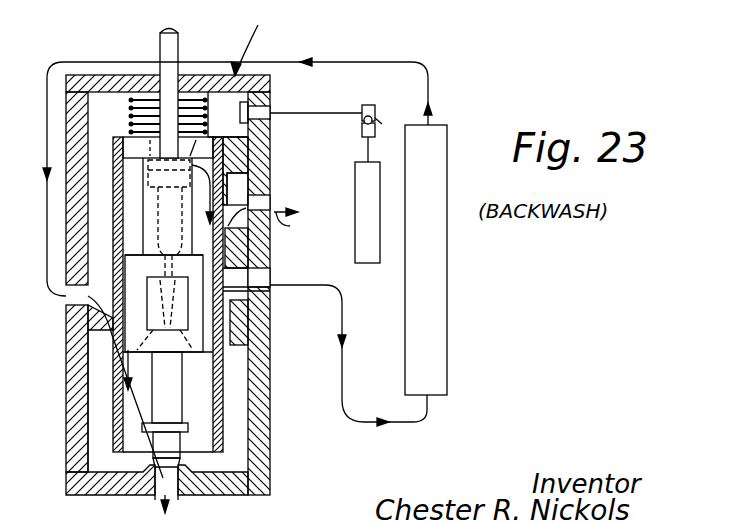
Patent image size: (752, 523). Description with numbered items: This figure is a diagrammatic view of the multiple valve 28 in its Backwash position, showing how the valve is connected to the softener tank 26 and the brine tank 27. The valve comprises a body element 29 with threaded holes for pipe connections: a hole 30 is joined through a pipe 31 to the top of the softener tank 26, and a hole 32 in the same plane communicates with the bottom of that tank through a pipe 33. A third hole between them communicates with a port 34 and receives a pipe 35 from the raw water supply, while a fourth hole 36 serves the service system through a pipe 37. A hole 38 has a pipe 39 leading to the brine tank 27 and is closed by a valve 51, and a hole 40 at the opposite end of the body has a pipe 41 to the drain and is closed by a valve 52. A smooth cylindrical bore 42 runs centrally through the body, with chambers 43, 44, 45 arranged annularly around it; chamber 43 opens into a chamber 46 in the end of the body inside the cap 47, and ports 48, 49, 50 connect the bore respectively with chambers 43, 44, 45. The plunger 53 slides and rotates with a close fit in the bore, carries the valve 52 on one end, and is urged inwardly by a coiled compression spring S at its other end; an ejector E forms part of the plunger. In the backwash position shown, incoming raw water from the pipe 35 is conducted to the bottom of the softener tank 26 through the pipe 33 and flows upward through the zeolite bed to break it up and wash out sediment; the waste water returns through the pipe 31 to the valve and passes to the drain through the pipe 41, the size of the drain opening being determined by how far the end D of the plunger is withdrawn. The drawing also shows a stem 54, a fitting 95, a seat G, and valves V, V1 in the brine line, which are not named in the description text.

The softener tank 26 is at (407, 322).
The brine tank 27 is at (360, 255).
The multiple valve 28 is at (74, 398).
The body element 29 is at (268, 380).
The hole 30 is at (68, 312).
The pipe 31 is at (300, 63).
The hole 32 is at (264, 280).
The pipe 33 is at (344, 394).
The port 34 is at (151, 172).
The pipe 35 is at (225, 115).
The hole 36 is at (268, 203).
The pipe 37 is at (298, 222).
The hole 38 is at (266, 121).
The pipe 39 is at (368, 150).
The hole 40 is at (180, 492).
The pipe 41 is at (164, 496).
The cylindrical bore 42 is at (112, 438).
The chamber 43 is at (70, 338).
The chamber 44 is at (262, 322).
The chamber 45 is at (243, 190).
The chamber 46 is at (270, 148).
The cap 47 is at (271, 89).
The port 48 is at (114, 350).
The port 49 is at (262, 293).
The port 50 is at (266, 246).
The valve 51 is at (240, 115).
The valve 52 is at (186, 423).
The plunger 53 is at (182, 382).
The stem 54 is at (179, 42).
The valve connection 95 is at (378, 128).
The coiled compression spring S is at (130, 117).
The ejector E is at (167, 290).
The valve seat G is at (188, 433).
The end of plunger D is at (190, 464).
The valve V is at (372, 108).
The valve V1 is at (362, 129).